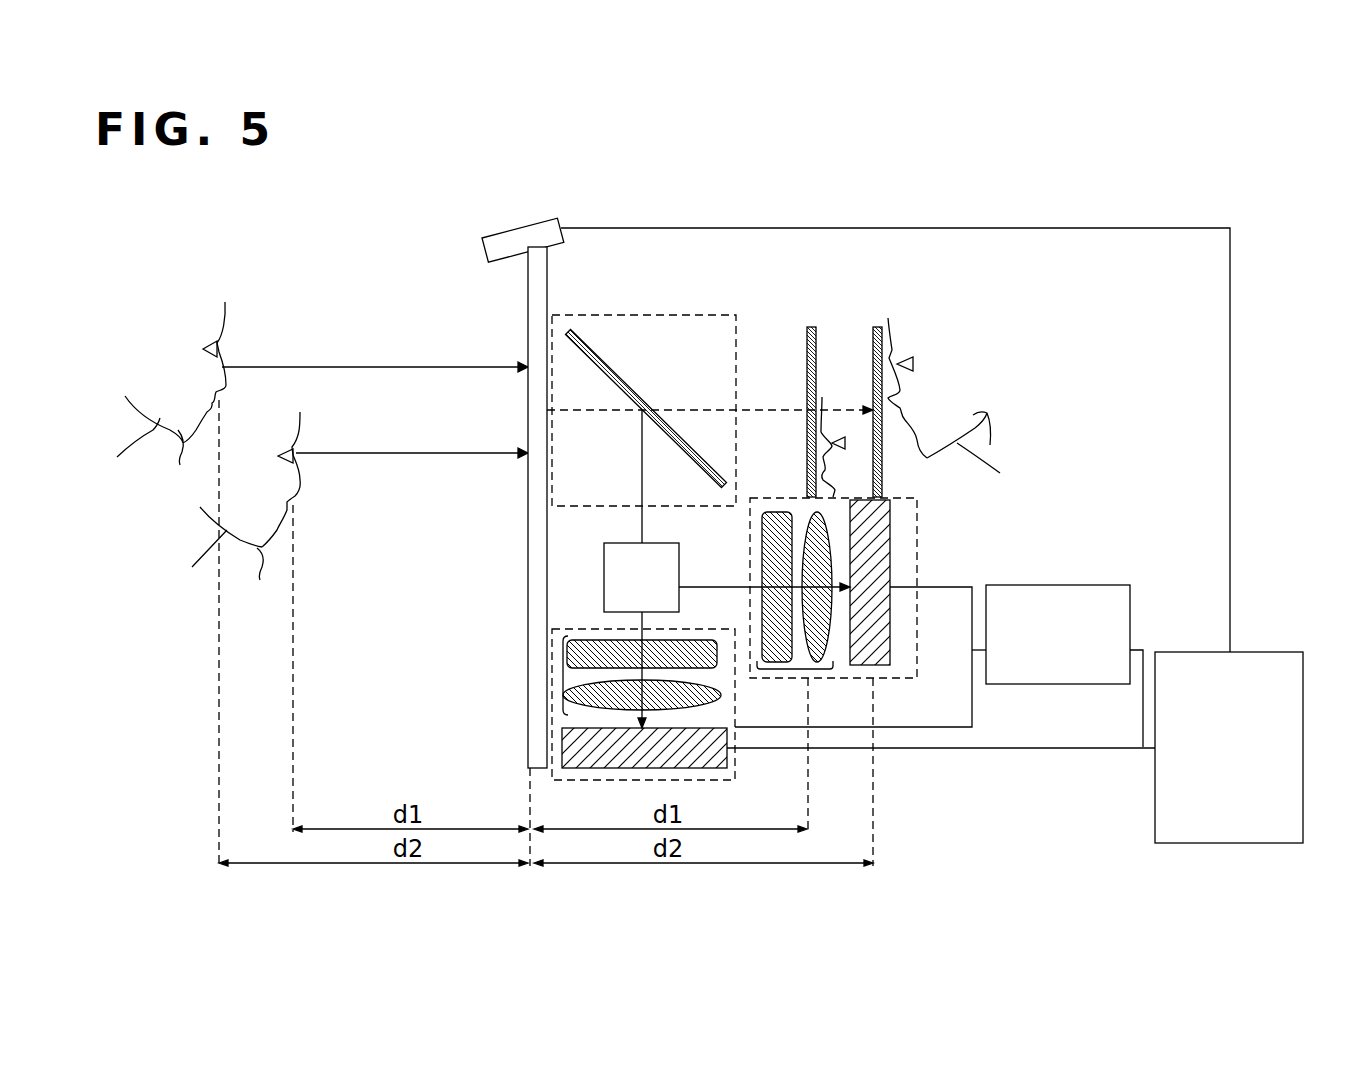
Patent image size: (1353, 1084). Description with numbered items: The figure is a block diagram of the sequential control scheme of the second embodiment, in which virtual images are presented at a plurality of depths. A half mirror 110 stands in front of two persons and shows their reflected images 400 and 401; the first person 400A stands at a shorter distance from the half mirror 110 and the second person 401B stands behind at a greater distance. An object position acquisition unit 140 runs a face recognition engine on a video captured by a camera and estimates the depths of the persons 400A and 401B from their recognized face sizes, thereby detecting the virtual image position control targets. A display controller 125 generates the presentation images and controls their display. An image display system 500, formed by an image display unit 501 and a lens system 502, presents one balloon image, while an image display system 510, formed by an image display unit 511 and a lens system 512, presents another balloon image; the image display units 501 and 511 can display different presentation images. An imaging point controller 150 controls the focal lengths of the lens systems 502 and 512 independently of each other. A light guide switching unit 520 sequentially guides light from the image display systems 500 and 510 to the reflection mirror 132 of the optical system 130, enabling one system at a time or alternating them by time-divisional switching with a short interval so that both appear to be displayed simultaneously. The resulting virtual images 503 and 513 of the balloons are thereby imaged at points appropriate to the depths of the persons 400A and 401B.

The object position acquisition unit 140 is at (513, 226).
The half mirror 110 is at (548, 270).
The optical system 130 is at (706, 315).
The reflection mirror 132 is at (620, 380).
The virtual image 503 is at (831, 315).
The virtual image 513 is at (881, 324).
The image display system 510 is at (780, 497).
The lens system 512 is at (793, 668).
The image display unit 511 is at (888, 568).
The light guide switching unit 520 is at (681, 562).
The image display system 500 is at (580, 628).
The lens system 502 is at (565, 680).
The image display unit 501 is at (592, 767).
The imaging point controller 150 is at (1083, 583).
The display controller 125 is at (1272, 652).
The reflected image 400 is at (843, 470).
The reflected image 401 is at (989, 438).
The second person 401B is at (171, 400).
The first person 400A is at (246, 511).